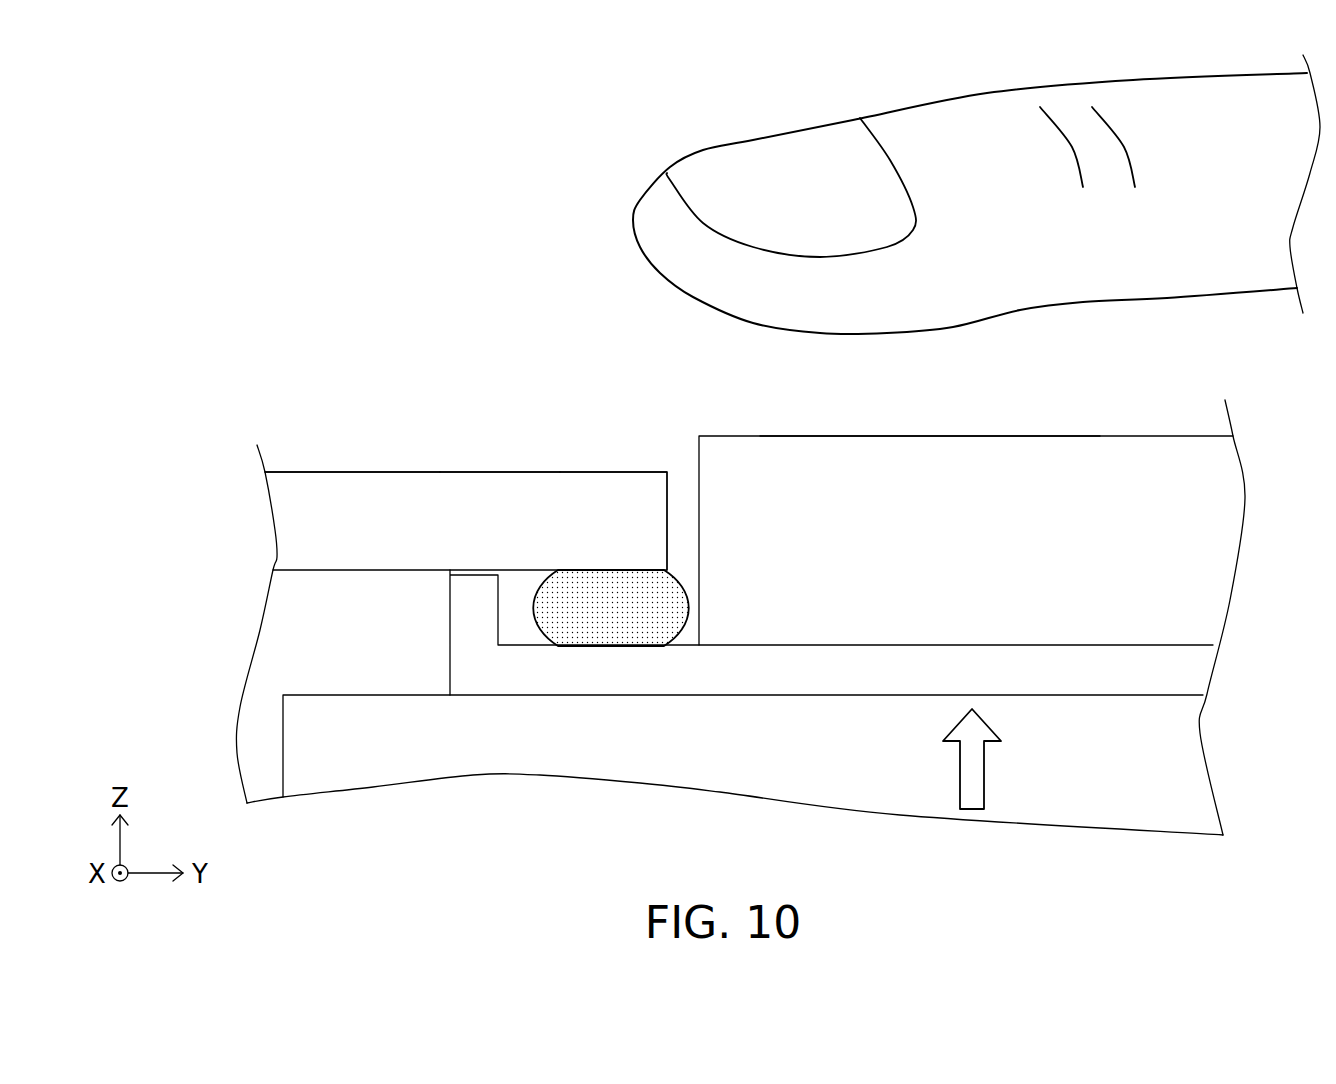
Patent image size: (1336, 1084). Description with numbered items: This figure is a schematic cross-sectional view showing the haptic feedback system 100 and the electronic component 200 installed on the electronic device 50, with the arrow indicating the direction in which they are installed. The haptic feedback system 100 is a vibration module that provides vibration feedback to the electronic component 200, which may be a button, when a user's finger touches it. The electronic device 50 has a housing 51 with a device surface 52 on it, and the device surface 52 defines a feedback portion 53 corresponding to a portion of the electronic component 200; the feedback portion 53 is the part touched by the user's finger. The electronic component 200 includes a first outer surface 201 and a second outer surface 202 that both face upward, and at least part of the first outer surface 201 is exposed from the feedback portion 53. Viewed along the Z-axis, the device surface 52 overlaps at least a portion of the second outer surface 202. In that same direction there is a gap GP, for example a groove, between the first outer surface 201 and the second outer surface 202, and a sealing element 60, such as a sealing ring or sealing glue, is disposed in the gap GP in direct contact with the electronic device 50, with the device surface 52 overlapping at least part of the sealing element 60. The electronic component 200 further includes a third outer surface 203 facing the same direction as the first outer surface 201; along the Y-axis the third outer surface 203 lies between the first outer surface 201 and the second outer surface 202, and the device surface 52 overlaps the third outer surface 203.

The electronic device 50 is at (342, 397).
The housing 51 is at (362, 480).
The device surface 52 is at (465, 472).
The feedback portion 53 is at (612, 471).
The sealing element 60 is at (613, 622).
The haptic feedback system 100 is at (281, 760).
The electronic component 200 is at (1076, 455).
The first outer surface 201 is at (921, 436).
The second outer surface 202 is at (473, 575).
The third outer surface 203 is at (687, 646).
The gap GP is at (688, 578).